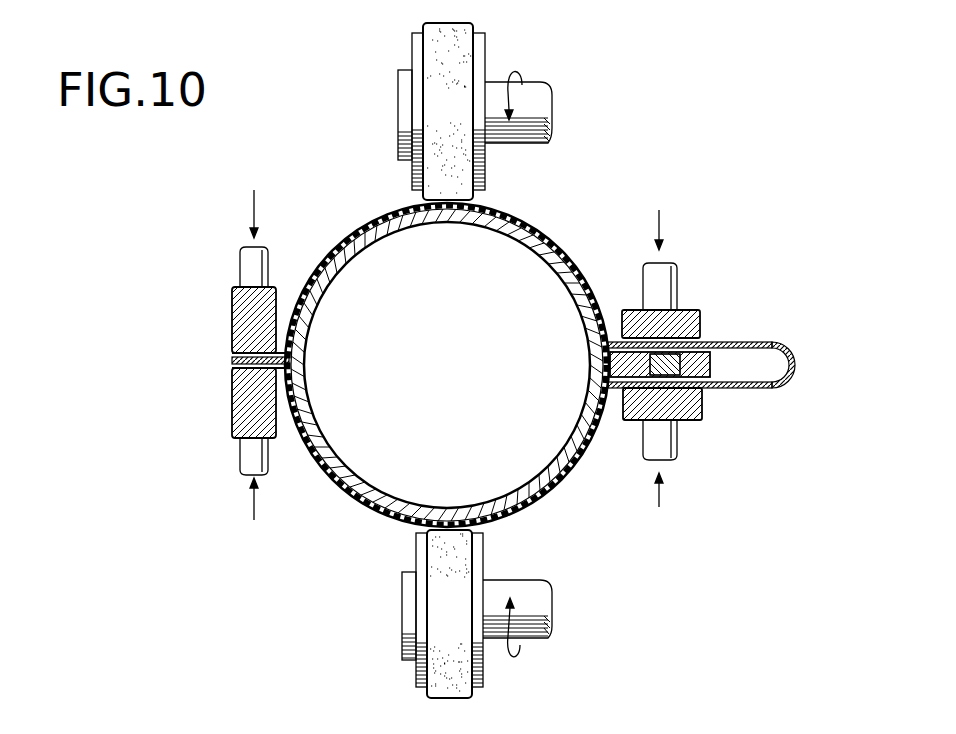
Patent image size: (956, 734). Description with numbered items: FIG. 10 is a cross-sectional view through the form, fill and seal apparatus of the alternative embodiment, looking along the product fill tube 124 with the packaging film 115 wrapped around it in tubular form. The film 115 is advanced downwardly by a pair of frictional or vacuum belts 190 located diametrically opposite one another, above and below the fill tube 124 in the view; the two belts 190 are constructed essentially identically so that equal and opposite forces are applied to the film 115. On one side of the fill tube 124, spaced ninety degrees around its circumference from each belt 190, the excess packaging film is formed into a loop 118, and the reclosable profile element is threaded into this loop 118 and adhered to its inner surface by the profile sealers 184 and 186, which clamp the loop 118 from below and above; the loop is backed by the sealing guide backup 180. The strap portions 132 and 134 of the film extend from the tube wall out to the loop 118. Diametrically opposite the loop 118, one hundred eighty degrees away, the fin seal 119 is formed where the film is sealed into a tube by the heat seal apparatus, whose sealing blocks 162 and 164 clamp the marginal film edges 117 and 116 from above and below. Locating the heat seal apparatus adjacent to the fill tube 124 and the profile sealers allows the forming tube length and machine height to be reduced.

The packaging film 115 is at (372, 506).
The product fill tube 124 is at (350, 258).
The frictional or vacuum belts 190 is at (440, 29).
The upper clamp block 162 is at (232, 297).
The lower clamp block 164 is at (232, 425).
The upper flange 117 is at (232, 353).
The fin seal 119 is at (232, 360).
The lower flange 116 is at (232, 372).
The profile sealer 186 is at (622, 312).
The profile sealer 184 is at (637, 420).
The upper strap 132 is at (700, 340).
The lower strap 134 is at (718, 390).
The loop of excess packaging film 118 is at (762, 390).
The sealing guide backup 180 is at (712, 363).